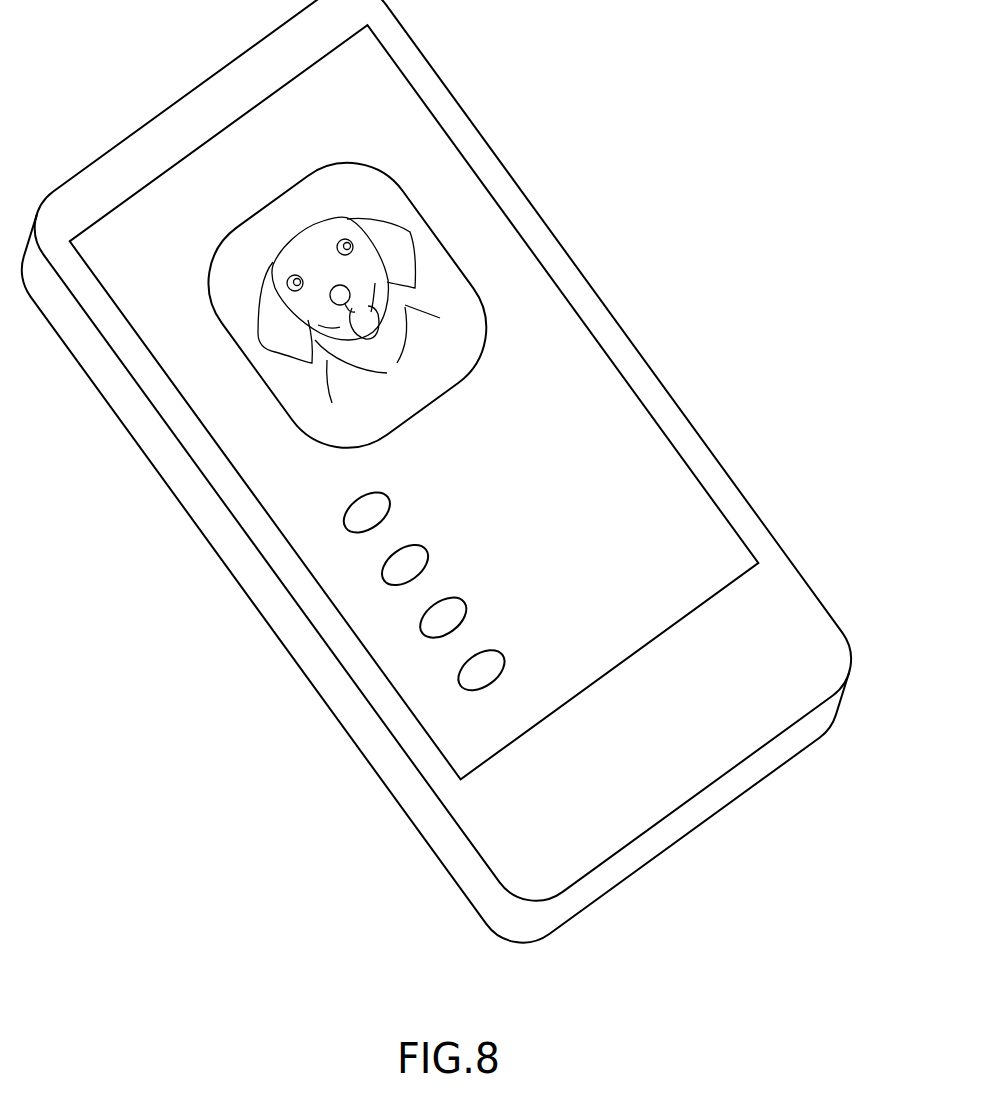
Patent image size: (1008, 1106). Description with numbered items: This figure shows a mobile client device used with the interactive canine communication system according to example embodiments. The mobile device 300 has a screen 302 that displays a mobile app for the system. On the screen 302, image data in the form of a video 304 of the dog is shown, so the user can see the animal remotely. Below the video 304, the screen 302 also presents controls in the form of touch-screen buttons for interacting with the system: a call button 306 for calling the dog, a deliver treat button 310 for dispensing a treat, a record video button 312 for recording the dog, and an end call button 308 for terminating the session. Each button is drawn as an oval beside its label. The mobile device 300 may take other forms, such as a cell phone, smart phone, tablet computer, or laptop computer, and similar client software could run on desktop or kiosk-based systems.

The mobile device 300 is at (775, 618).
The screen 302 is at (431, 165).
The video 304 is at (393, 338).
The call button 306 is at (352, 513).
The end call button 308 is at (466, 669).
The deliver treat button 310 is at (390, 565).
The record video button 312 is at (428, 617).